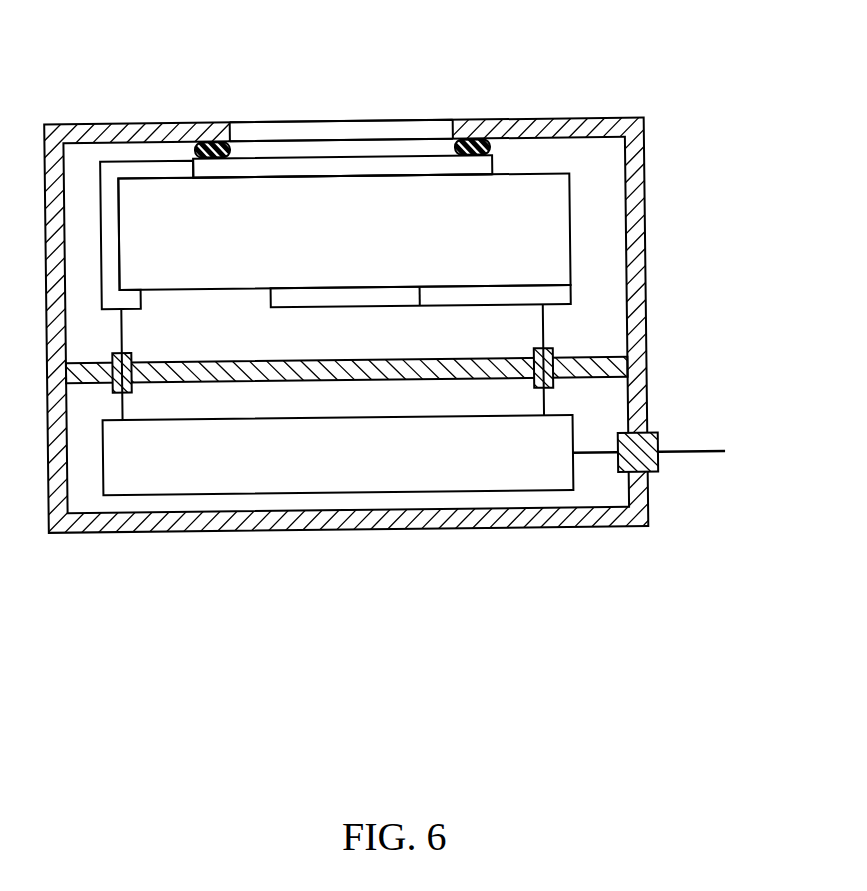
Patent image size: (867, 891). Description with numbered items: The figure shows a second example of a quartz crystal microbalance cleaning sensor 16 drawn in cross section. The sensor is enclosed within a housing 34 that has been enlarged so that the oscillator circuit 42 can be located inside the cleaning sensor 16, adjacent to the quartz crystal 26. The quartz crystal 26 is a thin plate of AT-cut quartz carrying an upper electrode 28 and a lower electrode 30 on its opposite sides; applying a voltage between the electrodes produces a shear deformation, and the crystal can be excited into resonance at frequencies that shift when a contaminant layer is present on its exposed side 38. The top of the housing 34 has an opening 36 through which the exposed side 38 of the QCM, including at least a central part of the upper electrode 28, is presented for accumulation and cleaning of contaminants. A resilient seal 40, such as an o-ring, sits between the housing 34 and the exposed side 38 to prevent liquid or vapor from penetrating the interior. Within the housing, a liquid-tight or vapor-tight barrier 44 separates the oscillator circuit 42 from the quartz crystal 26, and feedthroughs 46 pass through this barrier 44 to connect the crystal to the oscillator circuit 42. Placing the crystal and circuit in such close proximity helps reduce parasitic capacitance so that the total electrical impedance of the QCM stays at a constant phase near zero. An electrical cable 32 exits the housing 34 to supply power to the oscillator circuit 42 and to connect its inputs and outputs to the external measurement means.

The cleaning sensor 16 is at (433, 363).
The quartz crystal 26 is at (486, 242).
The upper electrode 28 is at (359, 165).
The lower electrode 30 is at (358, 298).
The electrical cable 32 is at (686, 452).
The housing 34 is at (646, 210).
The opening 36 is at (232, 139).
The exposed side 38 is at (379, 158).
The resilient seal 40 is at (235, 148).
The oscillator circuit 42 is at (486, 466).
The barrier 44 is at (332, 363).
The feedthroughs 46 is at (535, 352).